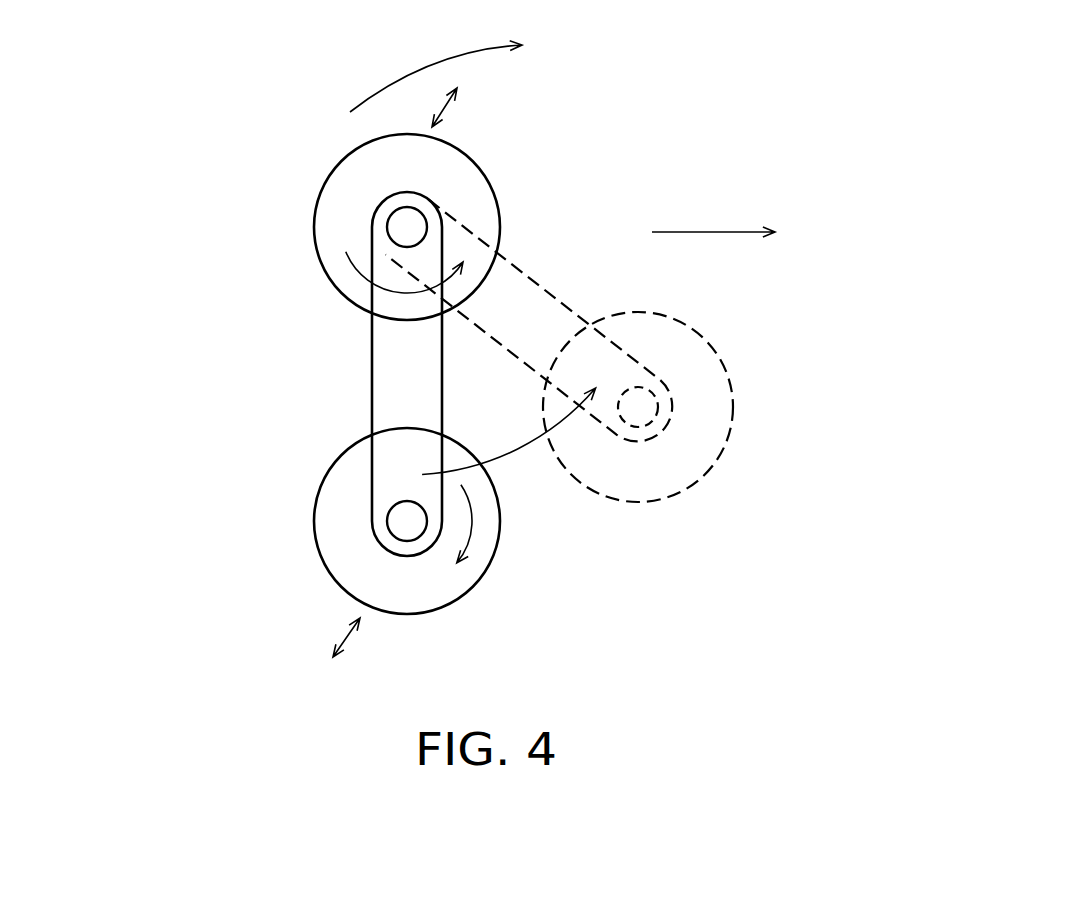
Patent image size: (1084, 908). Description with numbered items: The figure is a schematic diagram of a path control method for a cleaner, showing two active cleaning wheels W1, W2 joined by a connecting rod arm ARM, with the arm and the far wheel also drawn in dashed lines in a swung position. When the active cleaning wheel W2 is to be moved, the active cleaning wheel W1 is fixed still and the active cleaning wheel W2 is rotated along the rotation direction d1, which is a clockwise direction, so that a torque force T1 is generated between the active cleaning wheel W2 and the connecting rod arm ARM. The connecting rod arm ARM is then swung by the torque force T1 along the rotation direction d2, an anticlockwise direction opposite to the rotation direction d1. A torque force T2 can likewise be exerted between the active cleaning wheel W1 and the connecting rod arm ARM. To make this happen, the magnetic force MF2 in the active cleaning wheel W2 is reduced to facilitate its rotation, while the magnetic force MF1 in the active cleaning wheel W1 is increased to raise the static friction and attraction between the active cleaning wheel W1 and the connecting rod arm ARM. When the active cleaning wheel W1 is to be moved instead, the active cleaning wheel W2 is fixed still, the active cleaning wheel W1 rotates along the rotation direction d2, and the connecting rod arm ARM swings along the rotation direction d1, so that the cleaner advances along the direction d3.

The active cleaning wheel W1 is at (328, 223).
The active cleaning wheel W2 is at (338, 498).
The connecting rod arm ARM is at (395, 397).
The torque force T1 is at (522, 460).
The torque force T2 is at (410, 287).
The rotation direction d1 is at (456, 311).
The rotation direction d2 is at (607, 367).
The direction d3 is at (734, 231).
The magnetic force MF1 is at (464, 110).
The magnetic force MF2 is at (368, 641).